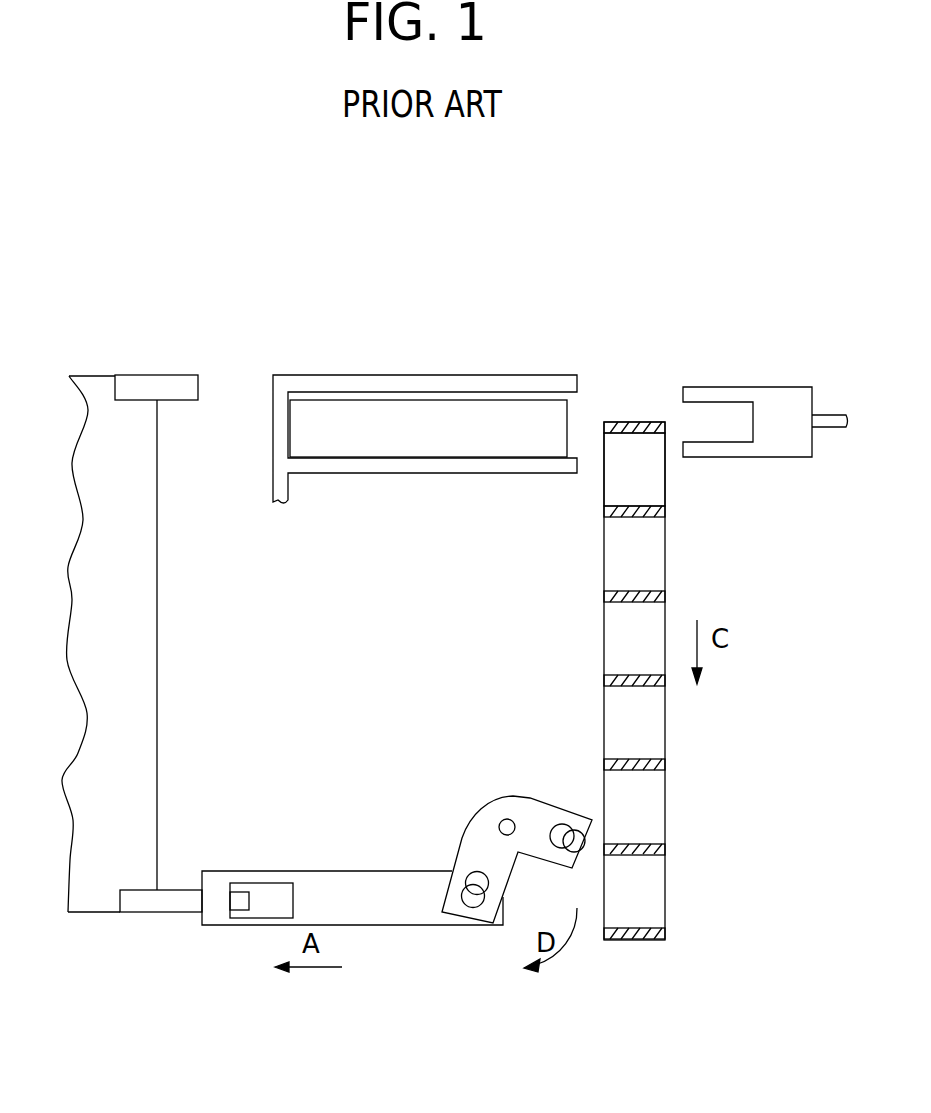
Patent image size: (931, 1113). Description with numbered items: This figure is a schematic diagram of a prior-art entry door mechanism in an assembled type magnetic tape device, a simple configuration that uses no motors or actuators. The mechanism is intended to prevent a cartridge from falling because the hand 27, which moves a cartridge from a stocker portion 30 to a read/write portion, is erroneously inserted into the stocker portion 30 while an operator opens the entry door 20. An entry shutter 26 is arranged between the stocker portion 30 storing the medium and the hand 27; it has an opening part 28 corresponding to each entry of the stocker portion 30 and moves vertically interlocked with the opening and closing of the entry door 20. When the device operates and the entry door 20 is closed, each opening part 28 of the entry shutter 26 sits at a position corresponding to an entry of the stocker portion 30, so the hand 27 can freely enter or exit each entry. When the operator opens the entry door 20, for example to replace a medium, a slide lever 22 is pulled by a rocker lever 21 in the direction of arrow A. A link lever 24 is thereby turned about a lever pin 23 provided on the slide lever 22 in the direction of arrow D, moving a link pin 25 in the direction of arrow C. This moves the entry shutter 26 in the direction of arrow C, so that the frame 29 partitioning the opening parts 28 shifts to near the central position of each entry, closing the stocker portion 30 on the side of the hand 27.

The entry door 20 is at (92, 373).
The rocker lever 21 is at (140, 900).
The slide lever 22 is at (328, 888).
The lever pin 23 is at (473, 907).
The link lever 24 is at (487, 828).
The link pin 25 is at (552, 830).
The entry shutter 26 is at (665, 883).
The hand 27 is at (787, 385).
The opening part 28 is at (648, 472).
The frame 29 is at (605, 510).
The stocker portion 30 is at (545, 372).